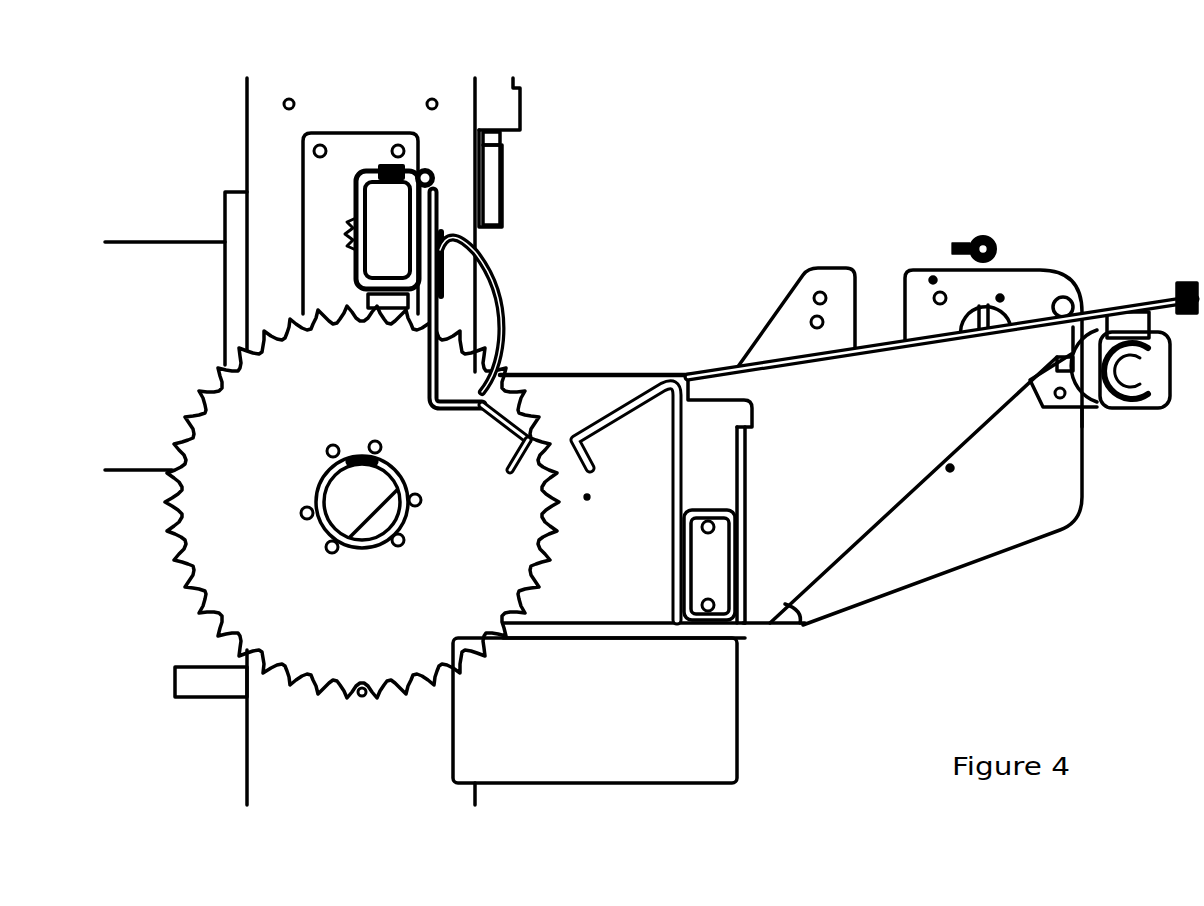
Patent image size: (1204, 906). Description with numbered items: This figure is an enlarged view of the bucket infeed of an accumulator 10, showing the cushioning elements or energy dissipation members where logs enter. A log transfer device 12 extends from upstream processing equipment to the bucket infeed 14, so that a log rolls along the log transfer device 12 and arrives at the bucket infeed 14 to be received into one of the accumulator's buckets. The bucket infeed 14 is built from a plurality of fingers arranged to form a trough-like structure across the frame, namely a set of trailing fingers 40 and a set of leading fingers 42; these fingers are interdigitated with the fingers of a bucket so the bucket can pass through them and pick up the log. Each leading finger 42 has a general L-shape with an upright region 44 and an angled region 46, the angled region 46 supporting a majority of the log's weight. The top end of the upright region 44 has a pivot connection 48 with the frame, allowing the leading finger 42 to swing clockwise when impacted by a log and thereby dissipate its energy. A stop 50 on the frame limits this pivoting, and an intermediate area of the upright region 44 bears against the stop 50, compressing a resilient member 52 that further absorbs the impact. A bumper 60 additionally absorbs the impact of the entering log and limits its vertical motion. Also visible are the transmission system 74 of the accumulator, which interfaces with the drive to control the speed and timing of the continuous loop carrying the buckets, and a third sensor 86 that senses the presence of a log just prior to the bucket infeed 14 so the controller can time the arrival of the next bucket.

The accumulator 10 is at (212, 127).
The log transfer device 12 is at (1083, 228).
The bucket infeed 14 is at (588, 234).
The trailing fingers 40 is at (603, 407).
The leading fingers 42 is at (508, 420).
The upright region 44 is at (443, 253).
The angled region 46 is at (515, 410).
The pivot connection 48 is at (423, 170).
The stop 50 is at (417, 333).
The resilient member 52 is at (424, 365).
The bumper 60 is at (500, 300).
The transmission system 74 is at (367, 636).
The third sensor 86 is at (970, 238).